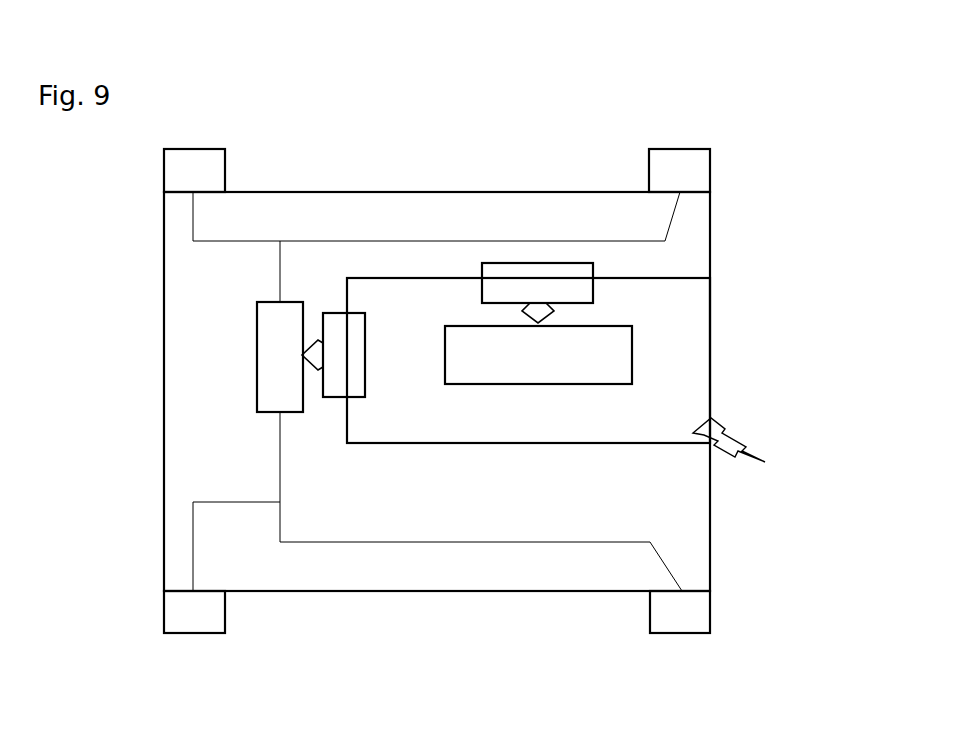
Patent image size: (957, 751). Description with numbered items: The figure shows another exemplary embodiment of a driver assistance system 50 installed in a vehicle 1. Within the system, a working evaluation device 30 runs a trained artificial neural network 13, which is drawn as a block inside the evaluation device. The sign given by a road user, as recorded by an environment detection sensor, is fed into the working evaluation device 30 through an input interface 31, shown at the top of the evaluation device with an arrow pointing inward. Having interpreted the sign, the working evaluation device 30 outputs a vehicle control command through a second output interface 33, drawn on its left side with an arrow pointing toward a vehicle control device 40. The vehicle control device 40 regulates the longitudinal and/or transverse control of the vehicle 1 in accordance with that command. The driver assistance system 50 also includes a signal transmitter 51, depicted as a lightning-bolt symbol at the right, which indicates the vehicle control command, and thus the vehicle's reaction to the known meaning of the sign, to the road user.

The vehicle 1 is at (118, 239).
The artificial neural network 13 is at (635, 353).
The working evaluation device 30 is at (380, 278).
The input interface 31 is at (537, 263).
The second output interface 33 is at (335, 397).
The vehicle control device 40 is at (258, 357).
The driver assistance system 50 is at (577, 250).
The signal transmitter 51 is at (743, 443).